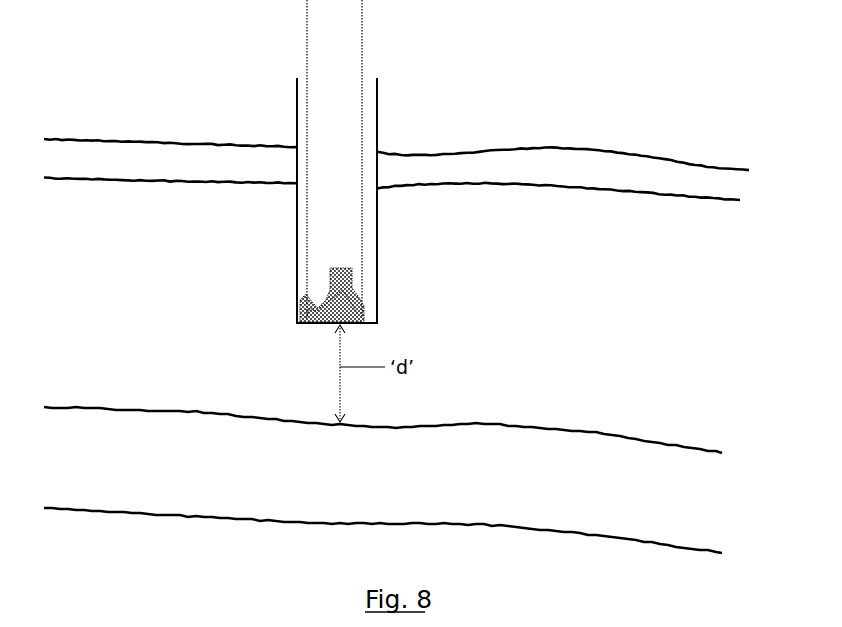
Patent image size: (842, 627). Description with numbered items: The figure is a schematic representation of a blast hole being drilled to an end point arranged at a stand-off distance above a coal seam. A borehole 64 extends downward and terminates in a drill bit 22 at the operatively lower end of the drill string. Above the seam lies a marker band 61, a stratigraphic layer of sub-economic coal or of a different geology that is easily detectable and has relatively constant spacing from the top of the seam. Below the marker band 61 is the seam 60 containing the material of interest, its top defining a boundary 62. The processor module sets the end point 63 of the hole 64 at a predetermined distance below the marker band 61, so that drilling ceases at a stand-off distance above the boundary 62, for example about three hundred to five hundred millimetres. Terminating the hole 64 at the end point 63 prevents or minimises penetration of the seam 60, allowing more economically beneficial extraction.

The drill bit 22 is at (357, 307).
The seam 60 is at (555, 453).
The marker band 61 is at (637, 170).
The boundary 62 is at (660, 440).
The end point 63 is at (297, 321).
The borehole 64 is at (377, 105).